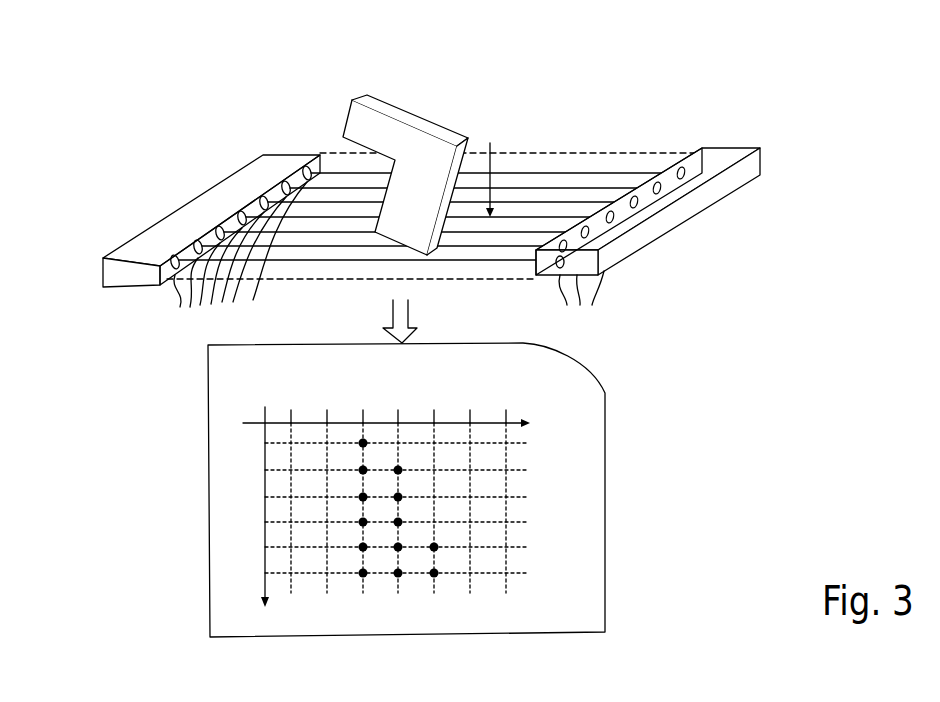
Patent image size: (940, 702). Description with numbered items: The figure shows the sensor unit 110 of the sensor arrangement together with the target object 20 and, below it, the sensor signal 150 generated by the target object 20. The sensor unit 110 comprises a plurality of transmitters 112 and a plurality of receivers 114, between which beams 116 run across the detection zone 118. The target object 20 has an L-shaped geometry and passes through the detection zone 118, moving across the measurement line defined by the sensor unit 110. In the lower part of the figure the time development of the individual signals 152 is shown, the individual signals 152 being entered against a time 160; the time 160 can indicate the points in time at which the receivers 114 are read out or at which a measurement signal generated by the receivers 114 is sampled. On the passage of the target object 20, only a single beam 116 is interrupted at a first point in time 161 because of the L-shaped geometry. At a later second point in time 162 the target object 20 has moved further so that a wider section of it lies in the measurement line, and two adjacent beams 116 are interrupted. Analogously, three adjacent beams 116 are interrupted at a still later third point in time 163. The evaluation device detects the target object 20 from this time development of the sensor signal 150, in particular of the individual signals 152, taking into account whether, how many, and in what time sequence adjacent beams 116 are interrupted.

The target object 20 is at (417, 117).
The sensor unit 110 is at (199, 117).
The transmitters 112 is at (581, 305).
The receivers 114 is at (240, 260).
The beam 116 is at (582, 186).
The detection zone 118 is at (535, 152).
The sensor signal 150 is at (653, 462).
The individual signals 152 is at (506, 410).
The time 160 is at (266, 588).
The first point in time 161 is at (267, 444).
The second point in time 162 is at (265, 472).
The third point in time 163 is at (265, 550).